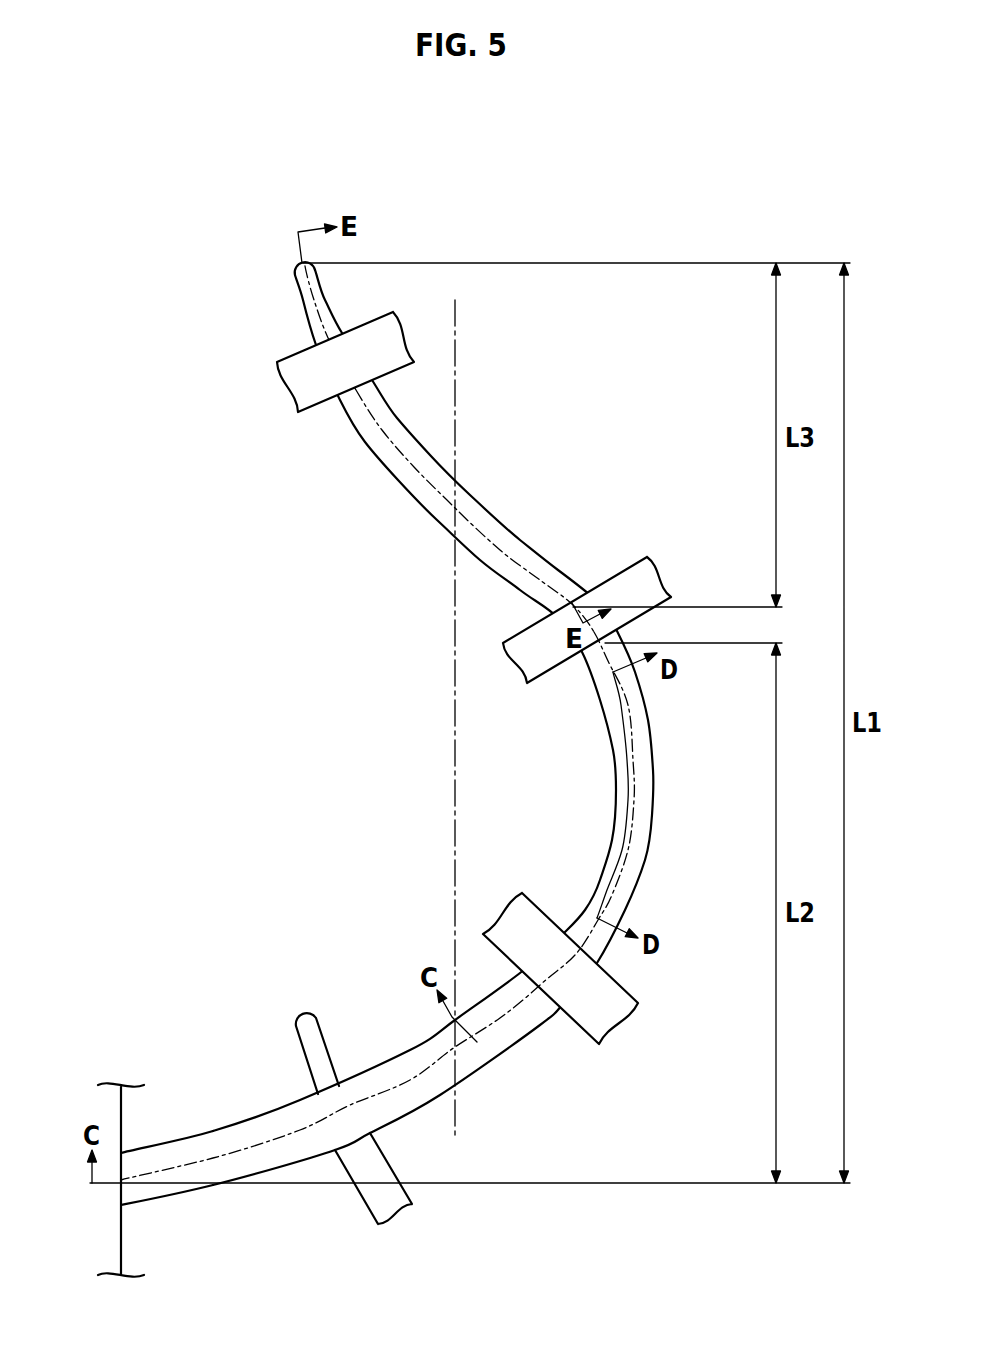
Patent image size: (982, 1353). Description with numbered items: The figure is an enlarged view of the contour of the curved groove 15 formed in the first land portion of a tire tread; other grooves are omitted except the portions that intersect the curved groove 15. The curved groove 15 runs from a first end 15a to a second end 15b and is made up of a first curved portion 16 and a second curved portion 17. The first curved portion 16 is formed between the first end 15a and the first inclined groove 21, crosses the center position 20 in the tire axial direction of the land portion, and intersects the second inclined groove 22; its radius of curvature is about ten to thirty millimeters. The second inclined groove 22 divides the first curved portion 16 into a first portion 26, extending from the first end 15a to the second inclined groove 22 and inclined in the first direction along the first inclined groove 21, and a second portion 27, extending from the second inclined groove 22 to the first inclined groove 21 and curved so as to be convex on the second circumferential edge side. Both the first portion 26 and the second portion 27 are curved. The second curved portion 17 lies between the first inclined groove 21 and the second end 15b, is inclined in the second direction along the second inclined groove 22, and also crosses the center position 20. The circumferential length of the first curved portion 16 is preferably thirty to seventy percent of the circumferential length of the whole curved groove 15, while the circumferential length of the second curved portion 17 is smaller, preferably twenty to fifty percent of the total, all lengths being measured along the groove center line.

The curved groove 15 is at (349, 721).
The first end 15a is at (118, 1186).
The second end 15b is at (302, 262).
The first curved portion 16 is at (377, 906).
The second curved portion 17 is at (411, 480).
The center position 20 is at (457, 418).
The first inclined groove 21 is at (637, 587).
The second inclined groove 22 is at (597, 1003).
The first portion 26 is at (408, 1077).
The second portion 27 is at (628, 770).